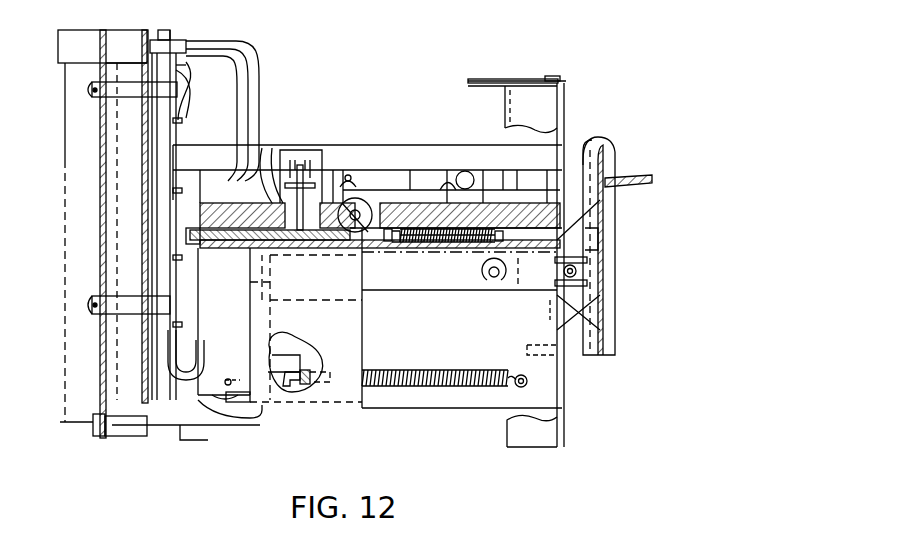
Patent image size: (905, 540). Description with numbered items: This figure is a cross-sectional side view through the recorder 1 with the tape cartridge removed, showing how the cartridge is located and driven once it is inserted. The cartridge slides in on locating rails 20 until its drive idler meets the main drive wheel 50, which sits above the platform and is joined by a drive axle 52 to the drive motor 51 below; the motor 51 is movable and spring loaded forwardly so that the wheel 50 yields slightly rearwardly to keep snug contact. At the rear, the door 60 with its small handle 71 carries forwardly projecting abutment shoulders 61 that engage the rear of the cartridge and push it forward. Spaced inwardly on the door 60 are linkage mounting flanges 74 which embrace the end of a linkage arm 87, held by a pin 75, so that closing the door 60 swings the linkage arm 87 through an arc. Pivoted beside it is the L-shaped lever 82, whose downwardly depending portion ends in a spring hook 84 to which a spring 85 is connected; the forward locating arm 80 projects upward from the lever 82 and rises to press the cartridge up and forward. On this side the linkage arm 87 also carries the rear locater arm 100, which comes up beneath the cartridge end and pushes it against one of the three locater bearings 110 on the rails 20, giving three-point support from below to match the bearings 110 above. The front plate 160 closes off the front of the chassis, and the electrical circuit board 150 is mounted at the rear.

The recorder 1 is at (680, 88).
The locating rails 20 is at (438, 168).
The main drive wheel 50 is at (315, 150).
The drive motor 51 is at (342, 324).
The drive axle 52 is at (272, 148).
The recorder door 60 is at (600, 221).
The abutment shoulders 61 is at (584, 145).
The handle 71 is at (640, 178).
The linkage mounting flanges 74 is at (572, 302).
The pin 75 is at (600, 246).
The forward locating arm 80 is at (371, 225).
The lever 82 is at (296, 358).
The spring hook 84 is at (290, 388).
The spring 85 is at (422, 388).
The linkage arm 87 is at (430, 280).
The rear locater arm 100 is at (445, 183).
The locater bearings 110 is at (352, 172).
The electrical circuit board 150 is at (105, 438).
The front plate 160 is at (566, 80).